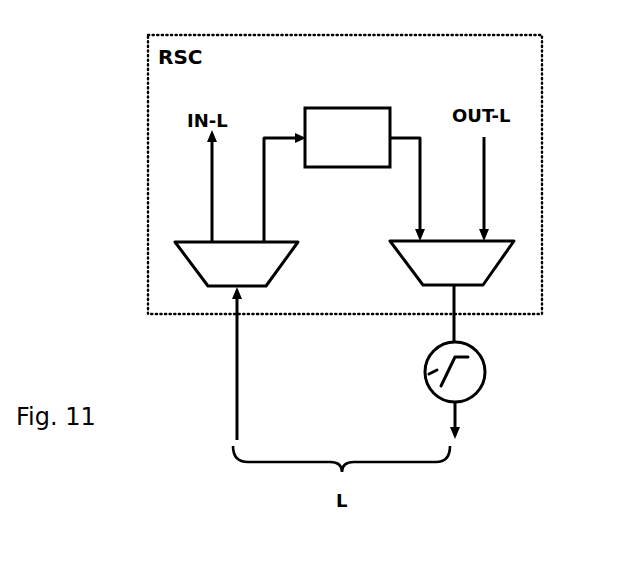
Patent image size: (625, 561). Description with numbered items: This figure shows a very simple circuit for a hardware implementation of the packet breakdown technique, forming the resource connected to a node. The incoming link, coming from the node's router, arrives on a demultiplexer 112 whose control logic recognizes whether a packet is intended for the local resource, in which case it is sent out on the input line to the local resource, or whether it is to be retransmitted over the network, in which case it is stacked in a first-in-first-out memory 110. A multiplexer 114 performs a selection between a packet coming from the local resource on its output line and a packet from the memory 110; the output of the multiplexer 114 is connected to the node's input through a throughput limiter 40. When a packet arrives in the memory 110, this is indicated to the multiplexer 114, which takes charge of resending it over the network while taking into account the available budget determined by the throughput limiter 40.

The FIFO memory 110 is at (361, 164).
The demultiplexer 112 is at (248, 275).
The multiplexer 114 is at (465, 274).
The throughput limiter 40 is at (427, 383).